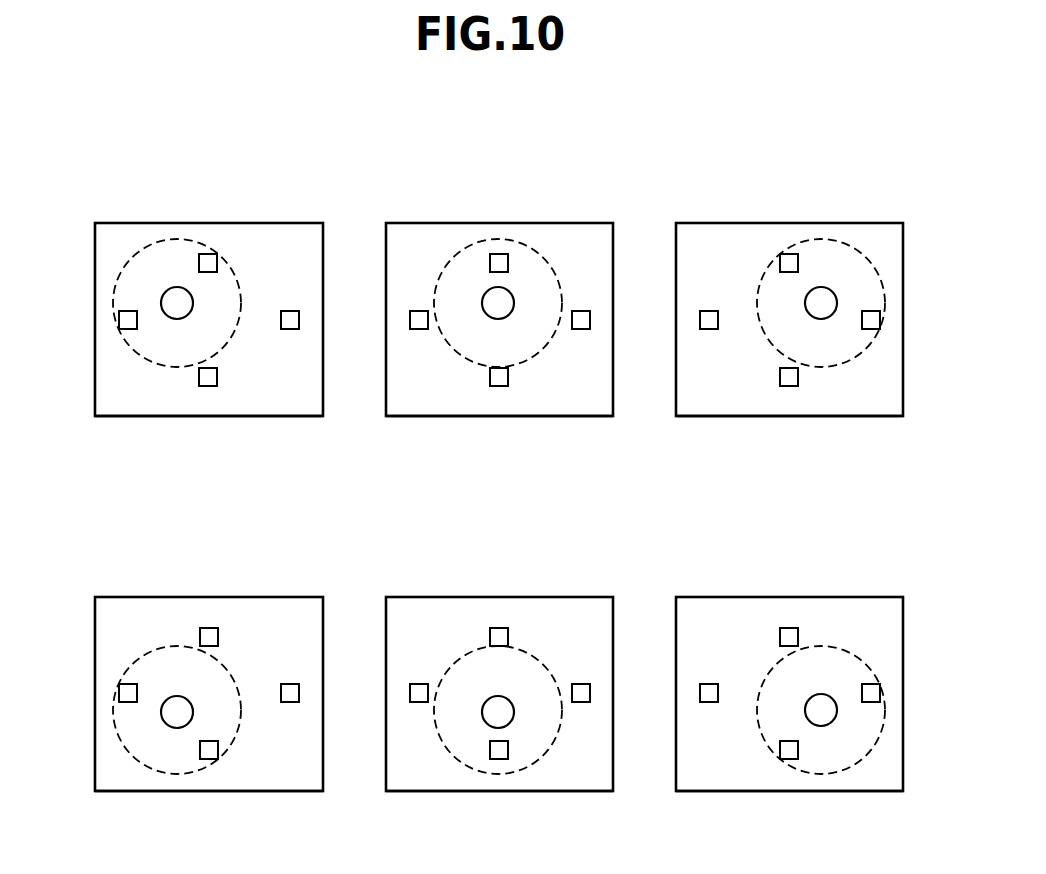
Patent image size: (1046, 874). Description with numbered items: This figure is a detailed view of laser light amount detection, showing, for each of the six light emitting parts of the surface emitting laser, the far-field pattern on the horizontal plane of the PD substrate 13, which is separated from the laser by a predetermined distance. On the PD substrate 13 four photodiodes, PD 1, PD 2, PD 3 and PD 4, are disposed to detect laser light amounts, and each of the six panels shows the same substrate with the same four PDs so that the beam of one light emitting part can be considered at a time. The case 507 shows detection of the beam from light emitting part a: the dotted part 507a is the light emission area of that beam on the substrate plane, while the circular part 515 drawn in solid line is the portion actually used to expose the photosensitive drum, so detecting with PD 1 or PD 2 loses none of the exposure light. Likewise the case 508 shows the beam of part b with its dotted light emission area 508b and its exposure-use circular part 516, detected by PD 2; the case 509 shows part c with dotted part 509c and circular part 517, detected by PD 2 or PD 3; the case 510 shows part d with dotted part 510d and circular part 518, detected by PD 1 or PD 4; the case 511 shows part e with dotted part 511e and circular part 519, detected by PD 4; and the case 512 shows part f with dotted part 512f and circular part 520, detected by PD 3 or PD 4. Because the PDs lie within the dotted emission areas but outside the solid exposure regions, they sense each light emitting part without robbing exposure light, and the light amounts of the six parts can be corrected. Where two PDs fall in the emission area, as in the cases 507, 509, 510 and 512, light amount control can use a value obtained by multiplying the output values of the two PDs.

The PD 1 is at (119, 320).
The PD 2 is at (211, 253).
The PD 3 is at (880, 319).
The PD 4 is at (208, 762).
The PD substrate 13 is at (262, 409).
The case 507 is at (291, 218).
The dotted part 507a is at (164, 238).
The case 508 is at (582, 218).
The dotted part 508b is at (465, 247).
The case 509 is at (876, 218).
The dotted part 509c is at (827, 238).
The case 510 is at (269, 590).
The dotted part 510d is at (165, 644).
The case 511 is at (562, 590).
The dotted part 511e is at (472, 647).
The case 512 is at (876, 590).
The dotted part 512f is at (823, 644).
The circular part 515 is at (158, 281).
The circular part 516 is at (496, 320).
The circular part 517 is at (818, 320).
The circular part 518 is at (173, 729).
The circular part 519 is at (487, 725).
The circular part 520 is at (820, 727).